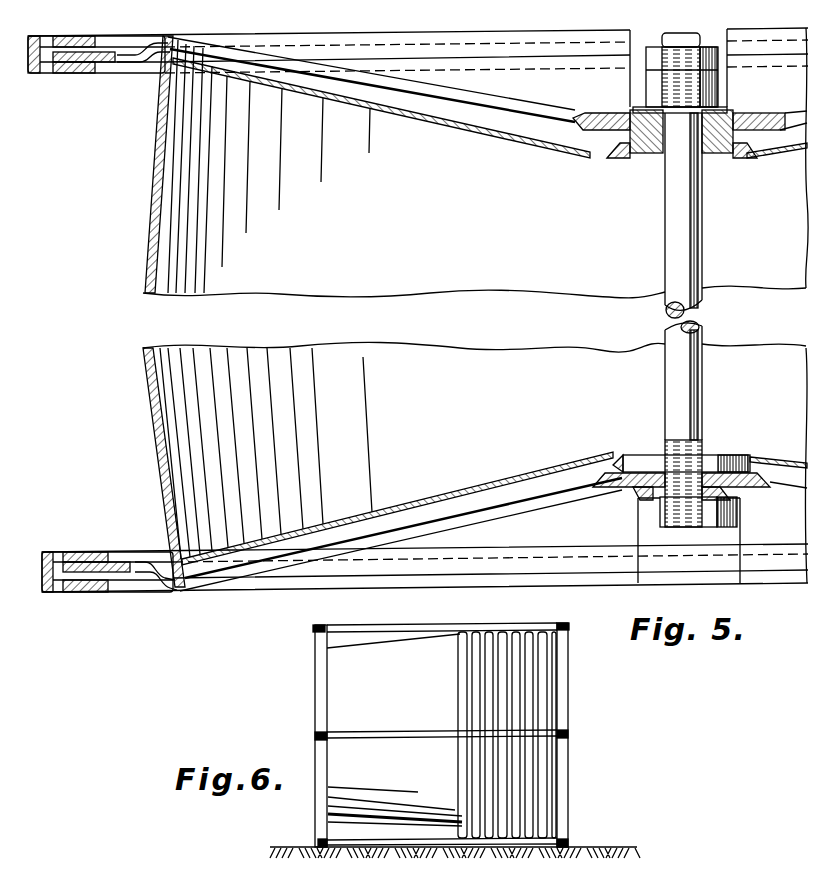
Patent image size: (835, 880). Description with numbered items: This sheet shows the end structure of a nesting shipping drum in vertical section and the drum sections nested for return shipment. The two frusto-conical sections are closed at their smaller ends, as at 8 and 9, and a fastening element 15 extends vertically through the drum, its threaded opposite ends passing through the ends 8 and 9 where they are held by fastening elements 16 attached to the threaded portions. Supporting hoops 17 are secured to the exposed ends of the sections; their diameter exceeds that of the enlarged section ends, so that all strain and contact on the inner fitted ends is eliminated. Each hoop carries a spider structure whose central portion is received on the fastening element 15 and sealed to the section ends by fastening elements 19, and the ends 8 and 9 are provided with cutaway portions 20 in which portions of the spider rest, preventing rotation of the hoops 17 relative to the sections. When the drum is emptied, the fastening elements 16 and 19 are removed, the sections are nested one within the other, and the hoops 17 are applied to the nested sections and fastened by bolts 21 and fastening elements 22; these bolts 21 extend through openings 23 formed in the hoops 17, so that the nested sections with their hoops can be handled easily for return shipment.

In FIG. 5, the closed smaller end 8 is at (435, 497).
In FIG. 5, the closed smaller end 9 is at (493, 133).
In FIG. 5, the fastening element 15 is at (687, 233).
In FIG. 5, the fastening elements 16 is at (708, 108).
In FIG. 5, the supporting hoops 17 is at (73, 75).
In FIG. 6, the supporting hoops 17 is at (315, 692).
In FIG. 5, the fastening elements 19 is at (703, 43).
In FIG. 5, the cutaway portions 20 is at (172, 42).
In FIG. 6, the bolts 21 is at (397, 625).
In FIG. 6, the fastening elements 22 is at (405, 850).
In FIG. 5, the openings 23 is at (58, 552).